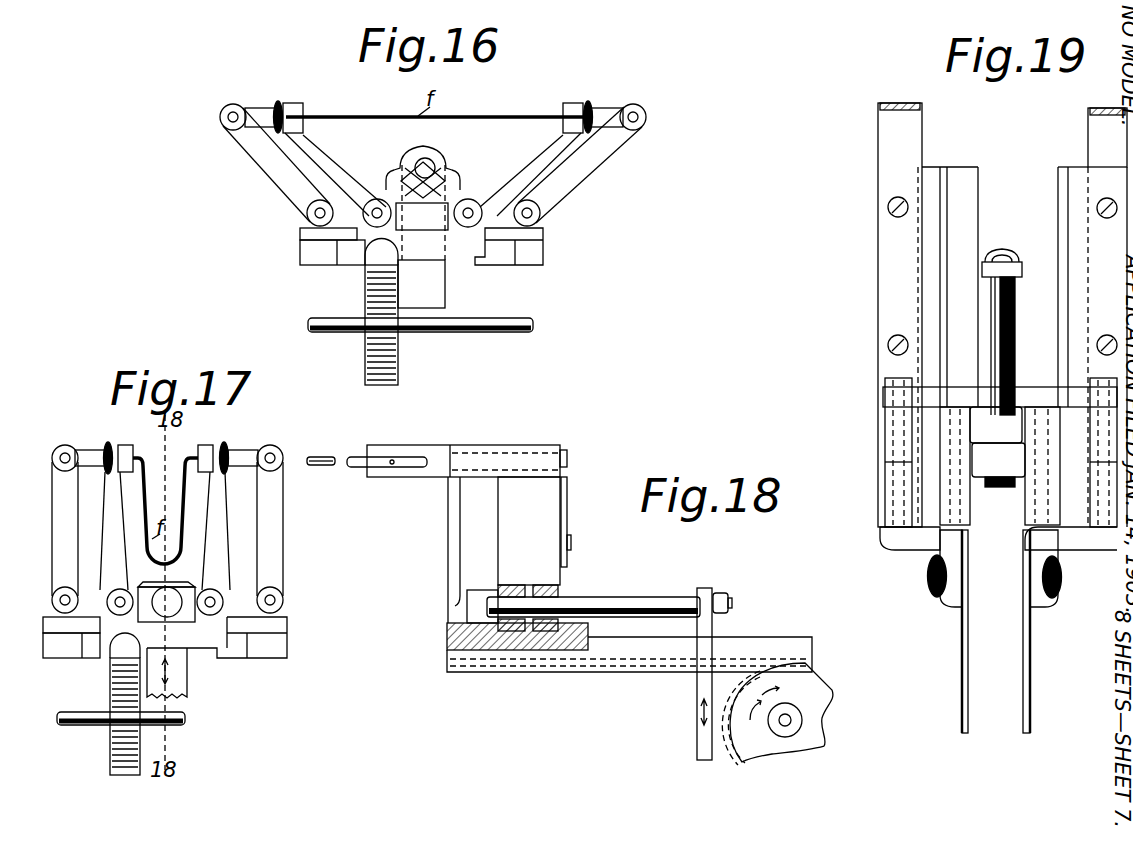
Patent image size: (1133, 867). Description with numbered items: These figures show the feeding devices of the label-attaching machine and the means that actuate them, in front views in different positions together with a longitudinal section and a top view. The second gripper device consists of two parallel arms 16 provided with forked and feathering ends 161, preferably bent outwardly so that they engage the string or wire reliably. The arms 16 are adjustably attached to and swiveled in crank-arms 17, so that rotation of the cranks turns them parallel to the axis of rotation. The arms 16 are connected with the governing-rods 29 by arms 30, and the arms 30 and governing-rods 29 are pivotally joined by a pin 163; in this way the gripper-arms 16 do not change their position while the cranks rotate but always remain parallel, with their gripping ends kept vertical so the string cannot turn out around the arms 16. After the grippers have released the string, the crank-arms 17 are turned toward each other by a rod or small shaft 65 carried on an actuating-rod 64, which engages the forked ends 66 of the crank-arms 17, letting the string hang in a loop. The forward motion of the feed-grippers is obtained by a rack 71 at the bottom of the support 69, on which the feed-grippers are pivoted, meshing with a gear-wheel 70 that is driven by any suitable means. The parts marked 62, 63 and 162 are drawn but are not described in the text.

In FIG. 16, the parallel arms 16 is at (303, 117).
In FIG. 17, the parallel arms 16 is at (134, 458).
In FIG. 19, the parallel arms 16 is at (963, 674).
In FIG. 16, the crank-arms 17 is at (322, 160).
In FIG. 17, the crank-arms 17 is at (127, 533).
In FIG. 18, the crank-arms 17 is at (529, 531).
In FIG. 19, the crank-arms 17 is at (1043, 495).
In FIG. 16, the governing-rods 29 is at (267, 163).
In FIG. 17, the governing-rods 29 is at (65, 527).
In FIG. 18, the governing-rods 29 is at (450, 548).
In FIG. 19, the governing-rods 29 is at (893, 522).
In FIG. 16, the arms 30 is at (268, 108).
In FIG. 17, the arms 30 is at (93, 450).
In FIG. 19, the arms 30 is at (915, 540).
In FIG. 19, the foot piece 62 is at (1038, 533).
In FIG. 16, the pivot block 63 is at (465, 213).
In FIG. 17, the pivot block 63 is at (117, 600).
In FIG. 16, the actuating-rod 64 is at (438, 289).
In FIG. 17, the actuating-rod 64 is at (186, 695).
In FIG. 18, the actuating-rod 64 is at (702, 685).
In FIG. 19, the actuating-rod 64 is at (1015, 270).
In FIG. 16, the rod or small shaft 65 is at (423, 162).
In FIG. 17, the rod or small shaft 65 is at (165, 618).
In FIG. 18, the rod or small shaft 65 is at (645, 599).
In FIG. 19, the rod or small shaft 65 is at (1015, 323).
In FIG. 16, the forked ends 66 is at (400, 174).
In FIG. 17, the forked ends 66 is at (168, 582).
In FIG. 18, the forked ends 66 is at (500, 585).
In FIG. 19, the forked ends 66 is at (997, 442).
In FIG. 16, the support 69 is at (421, 246).
In FIG. 17, the support 69 is at (227, 650).
In FIG. 16, the gear-wheel 70 is at (398, 356).
In FIG. 17, the gear-wheel 70 is at (140, 758).
In FIG. 18, the gear-wheel 70 is at (777, 714).
In FIG. 16, the rack 71 is at (373, 252).
In FIG. 17, the rack 71 is at (116, 645).
In FIG. 18, the rack 71 is at (605, 650).
In FIG. 17, the forked and feathering ends 161 is at (330, 455).
In FIG. 19, the cross bar 162 is at (888, 415).
In FIG. 16, the pin 163 is at (220, 118).
In FIG. 17, the pin 163 is at (57, 458).